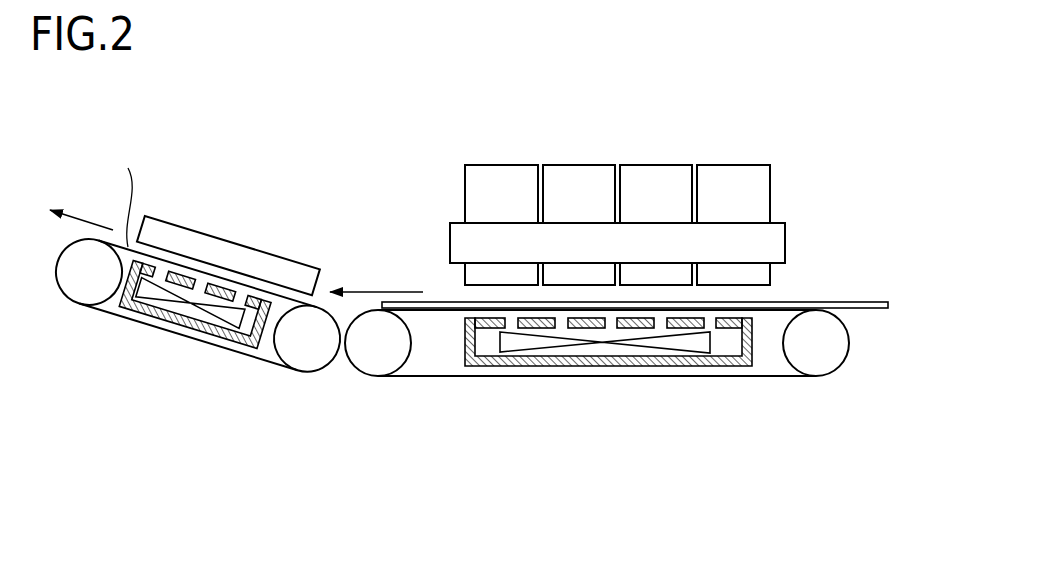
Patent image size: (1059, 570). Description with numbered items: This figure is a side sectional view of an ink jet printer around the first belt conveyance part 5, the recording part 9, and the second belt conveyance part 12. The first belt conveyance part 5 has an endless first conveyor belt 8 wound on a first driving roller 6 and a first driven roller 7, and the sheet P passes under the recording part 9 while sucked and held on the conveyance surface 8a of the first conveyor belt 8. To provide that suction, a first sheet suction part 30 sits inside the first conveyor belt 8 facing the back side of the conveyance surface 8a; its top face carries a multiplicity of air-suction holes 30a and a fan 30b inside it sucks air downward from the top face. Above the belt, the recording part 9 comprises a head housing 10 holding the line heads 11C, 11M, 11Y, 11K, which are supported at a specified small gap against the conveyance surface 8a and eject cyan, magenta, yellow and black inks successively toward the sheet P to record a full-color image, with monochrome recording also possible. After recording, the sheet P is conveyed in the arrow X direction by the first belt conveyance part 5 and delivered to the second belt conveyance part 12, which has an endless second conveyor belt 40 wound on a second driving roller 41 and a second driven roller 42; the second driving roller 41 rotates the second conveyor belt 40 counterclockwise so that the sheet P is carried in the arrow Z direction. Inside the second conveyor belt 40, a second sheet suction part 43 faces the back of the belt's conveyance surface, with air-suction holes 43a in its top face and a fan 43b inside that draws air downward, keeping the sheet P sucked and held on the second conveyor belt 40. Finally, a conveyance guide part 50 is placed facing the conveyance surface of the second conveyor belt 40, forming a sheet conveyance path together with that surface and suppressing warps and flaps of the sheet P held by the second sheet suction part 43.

The first belt conveyance part 5 is at (670, 447).
The first driving roller 6 is at (383, 355).
The first driven roller 7 is at (820, 358).
The first conveyor belt 8 is at (772, 378).
The conveyance surface 8a is at (452, 310).
The recording part 9 is at (633, 132).
The head housing 10 is at (787, 230).
The line head 11K is at (501, 194).
The line head 11Y is at (579, 194).
The line head 11M is at (656, 194).
The line head 11C is at (733, 194).
The second belt conveyance part 12 is at (165, 420).
The first sheet suction part 30 is at (533, 368).
The air-suction holes 30a is at (708, 322).
The fan 30b is at (650, 345).
The second conveyor belt 40 is at (240, 357).
The second driving roller 41 is at (90, 290).
The second driven roller 42 is at (307, 357).
The second sheet suction part 43 is at (140, 323).
The air-suction holes 43a is at (163, 268).
The fan 43b is at (213, 347).
The conveyance guide part 50 is at (260, 260).
The sheet P is at (860, 302).